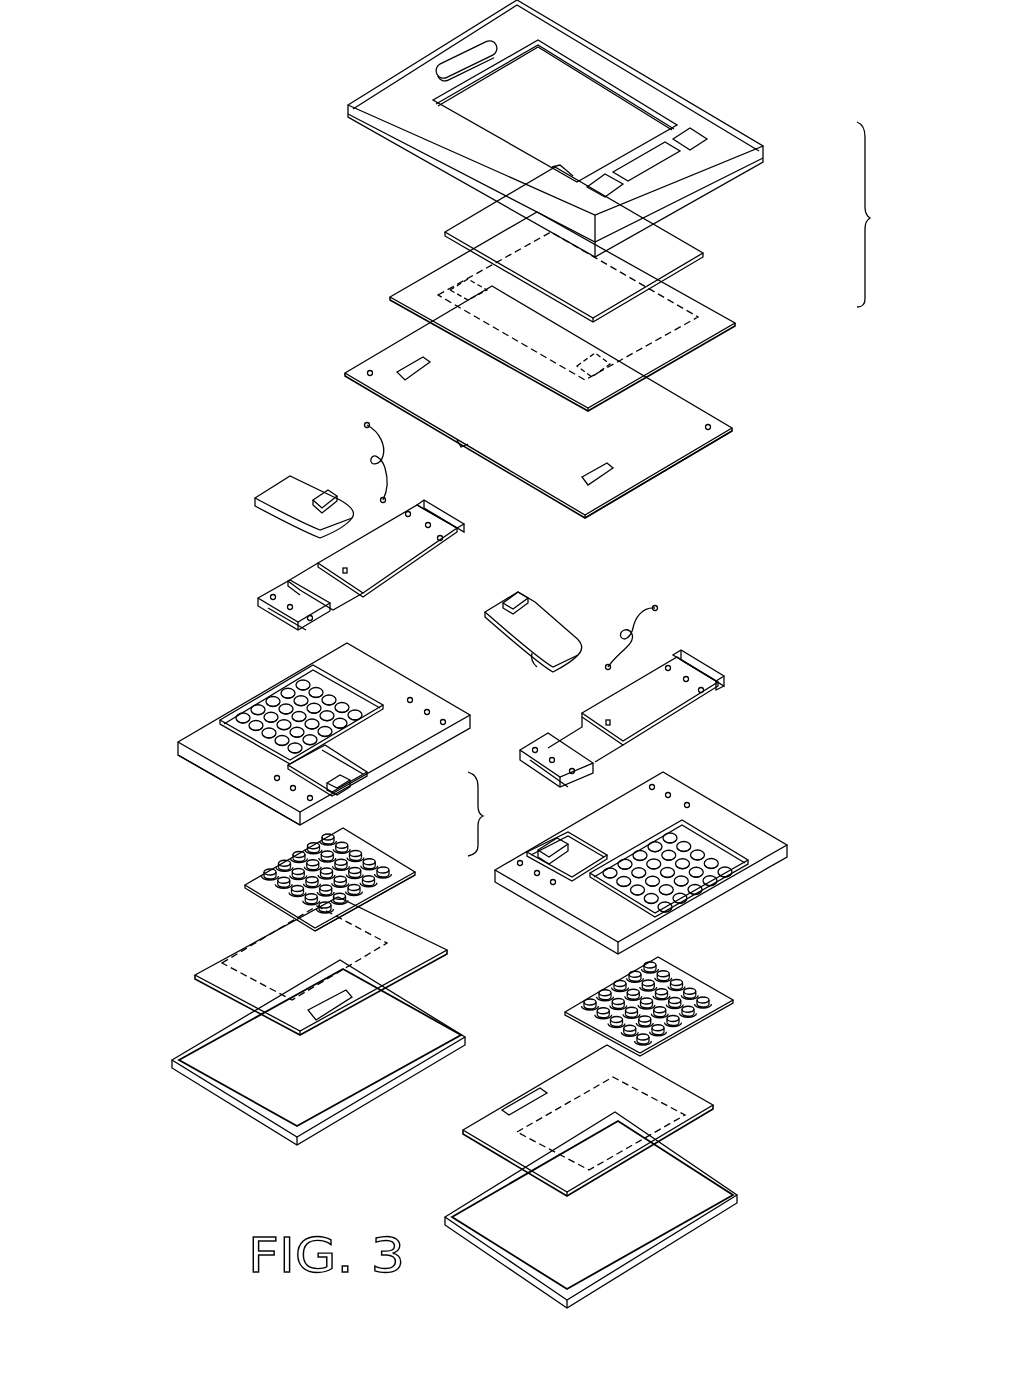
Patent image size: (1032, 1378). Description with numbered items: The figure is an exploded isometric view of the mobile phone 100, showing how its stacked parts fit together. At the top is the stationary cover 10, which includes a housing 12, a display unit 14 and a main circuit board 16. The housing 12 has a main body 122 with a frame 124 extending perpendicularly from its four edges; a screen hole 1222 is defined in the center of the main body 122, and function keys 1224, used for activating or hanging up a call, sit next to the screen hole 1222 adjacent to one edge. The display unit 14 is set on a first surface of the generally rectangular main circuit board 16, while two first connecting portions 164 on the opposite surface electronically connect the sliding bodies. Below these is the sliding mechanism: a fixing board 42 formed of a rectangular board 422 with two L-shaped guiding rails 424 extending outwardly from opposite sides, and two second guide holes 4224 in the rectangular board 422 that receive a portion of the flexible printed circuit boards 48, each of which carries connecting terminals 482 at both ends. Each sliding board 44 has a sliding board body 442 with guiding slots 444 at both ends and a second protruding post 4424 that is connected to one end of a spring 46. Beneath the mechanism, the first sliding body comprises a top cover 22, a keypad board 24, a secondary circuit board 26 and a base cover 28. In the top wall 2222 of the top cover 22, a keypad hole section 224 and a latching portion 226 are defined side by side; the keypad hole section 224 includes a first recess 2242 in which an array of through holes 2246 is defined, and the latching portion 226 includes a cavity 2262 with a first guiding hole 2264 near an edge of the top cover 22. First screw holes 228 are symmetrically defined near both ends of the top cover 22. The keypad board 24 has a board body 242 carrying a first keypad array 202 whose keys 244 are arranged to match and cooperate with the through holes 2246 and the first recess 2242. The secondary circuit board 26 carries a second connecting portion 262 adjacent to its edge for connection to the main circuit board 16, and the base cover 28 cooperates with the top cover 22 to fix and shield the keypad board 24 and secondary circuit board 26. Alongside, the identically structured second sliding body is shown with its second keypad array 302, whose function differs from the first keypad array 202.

The mobile phone 100 is at (362, 25).
The stationary cover 10 is at (621, 205).
The housing 12 is at (599, 128).
The main body 122 is at (557, 42).
The screen hole 1222 is at (572, 82).
The function keys 1224 is at (690, 142).
The frame 124 is at (385, 130).
The display unit 14 is at (672, 245).
The main circuit board 16 is at (596, 311).
The first connecting portions 164 is at (466, 290).
The fixing board 42 is at (559, 434).
The rectangular board 422 is at (645, 445).
The guiding rails 424 is at (590, 510).
The second guide holes 4224 is at (410, 368).
The sliding board 44 is at (333, 561).
The sliding board body 442 is at (388, 565).
The guiding slots 444 is at (434, 519).
The second protruding post 4424 is at (344, 571).
The spring 46 is at (382, 439).
The flexible printed circuit board 48 is at (266, 492).
The connecting terminals 482 is at (328, 492).
The top cover 22 is at (306, 733).
The top wall 2222 is at (232, 755).
The keypad hole section 224 is at (246, 687).
The first recess 2242 is at (328, 687).
The through holes 2246 is at (285, 690).
The latching portion 226 is at (417, 800).
The cavity 2262 is at (330, 772).
The first guiding hole 2264 is at (323, 764).
The first screw holes 228 is at (427, 712).
The keypad board 24 is at (327, 879).
The board body 242 is at (258, 882).
The keys 244 is at (290, 868).
The first keypad array 202 is at (385, 883).
The secondary circuit board 26 is at (316, 966).
The second connecting portion 262 is at (345, 1002).
The base cover 28 is at (218, 1067).
The second keypad array 302 is at (703, 1017).